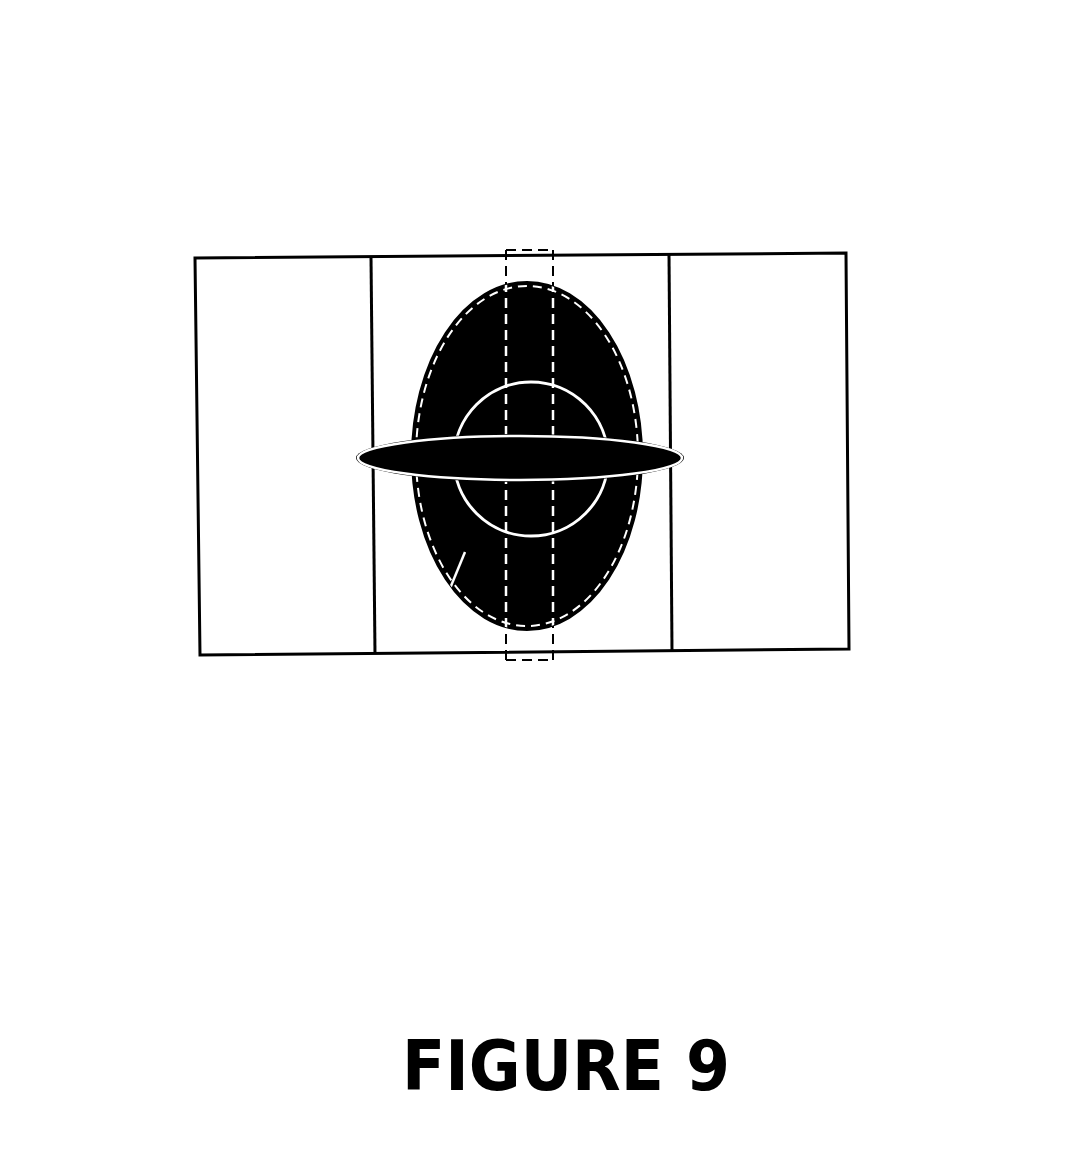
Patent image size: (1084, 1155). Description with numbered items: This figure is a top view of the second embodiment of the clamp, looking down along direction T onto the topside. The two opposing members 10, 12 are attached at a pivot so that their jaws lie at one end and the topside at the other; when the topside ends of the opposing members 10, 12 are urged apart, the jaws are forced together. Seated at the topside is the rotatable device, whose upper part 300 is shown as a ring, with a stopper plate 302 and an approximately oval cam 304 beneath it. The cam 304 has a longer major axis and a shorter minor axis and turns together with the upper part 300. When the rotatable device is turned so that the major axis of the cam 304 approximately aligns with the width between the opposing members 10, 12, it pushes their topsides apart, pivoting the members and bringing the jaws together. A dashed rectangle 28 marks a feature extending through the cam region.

The opposing member 10 is at (268, 605).
The opposing member 12 is at (748, 357).
The waveguide channel 28 is at (518, 620).
The upper part 300 is at (447, 450).
The stopper plate 302 is at (570, 412).
The cam 304 is at (465, 552).